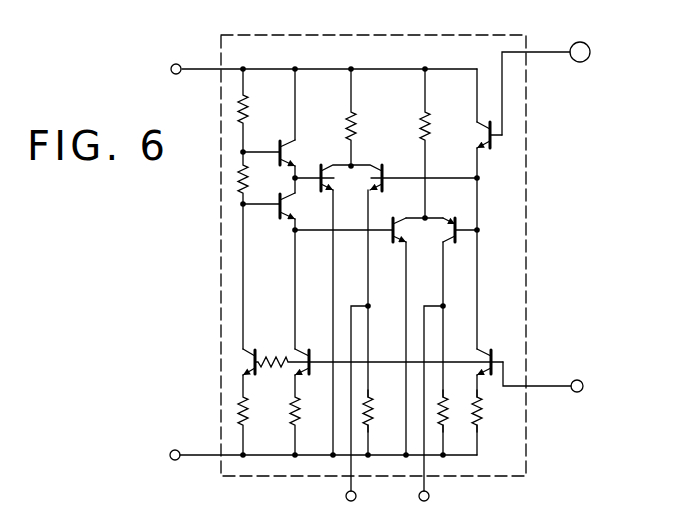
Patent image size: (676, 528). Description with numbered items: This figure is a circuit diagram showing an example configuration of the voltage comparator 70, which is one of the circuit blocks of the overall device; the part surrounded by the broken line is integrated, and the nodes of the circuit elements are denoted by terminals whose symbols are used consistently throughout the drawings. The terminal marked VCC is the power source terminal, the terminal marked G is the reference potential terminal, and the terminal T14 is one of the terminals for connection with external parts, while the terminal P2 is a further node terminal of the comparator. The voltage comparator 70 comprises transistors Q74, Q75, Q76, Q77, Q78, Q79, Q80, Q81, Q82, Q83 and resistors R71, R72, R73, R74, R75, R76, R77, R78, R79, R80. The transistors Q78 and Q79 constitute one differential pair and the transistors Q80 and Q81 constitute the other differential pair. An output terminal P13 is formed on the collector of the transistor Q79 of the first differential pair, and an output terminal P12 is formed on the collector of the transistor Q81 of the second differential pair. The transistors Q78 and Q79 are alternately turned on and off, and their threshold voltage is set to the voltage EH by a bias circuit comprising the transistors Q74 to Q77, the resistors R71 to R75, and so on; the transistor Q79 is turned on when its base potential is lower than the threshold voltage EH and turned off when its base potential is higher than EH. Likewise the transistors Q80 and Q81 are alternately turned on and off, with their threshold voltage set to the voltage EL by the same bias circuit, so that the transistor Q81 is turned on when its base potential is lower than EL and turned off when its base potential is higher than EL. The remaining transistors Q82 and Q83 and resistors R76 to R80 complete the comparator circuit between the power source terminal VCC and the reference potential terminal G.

The voltage comparator 70 is at (476, 38).
The power source terminal VCC is at (154, 58).
The reference potential terminal G is at (176, 443).
The terminal for connection with external parts T14 is at (552, 74).
The terminal P2 is at (577, 392).
The output terminal P13 is at (356, 498).
The output terminal P12 is at (429, 498).
The resistor R71 is at (251, 113).
The resistor R72 is at (264, 178).
The resistor R73 is at (250, 418).
The resistor R74 is at (268, 370).
The resistor R75 is at (302, 418).
The resistor R76 is at (358, 128).
The resistor R77 is at (375, 418).
The resistor R78 is at (432, 128).
The resistor R79 is at (447, 420).
The resistor R80 is at (482, 412).
The transistor Q74 is at (288, 152).
The transistor Q75 is at (288, 206).
The transistor Q76 is at (253, 350).
The transistor Q77 is at (308, 350).
The transistor Q78 is at (345, 178).
The transistor Q79 is at (383, 166).
The transistor Q80 is at (402, 244).
The transistor Q81 is at (445, 219).
The transistor Q82 is at (486, 138).
The transistor Q83 is at (489, 350).